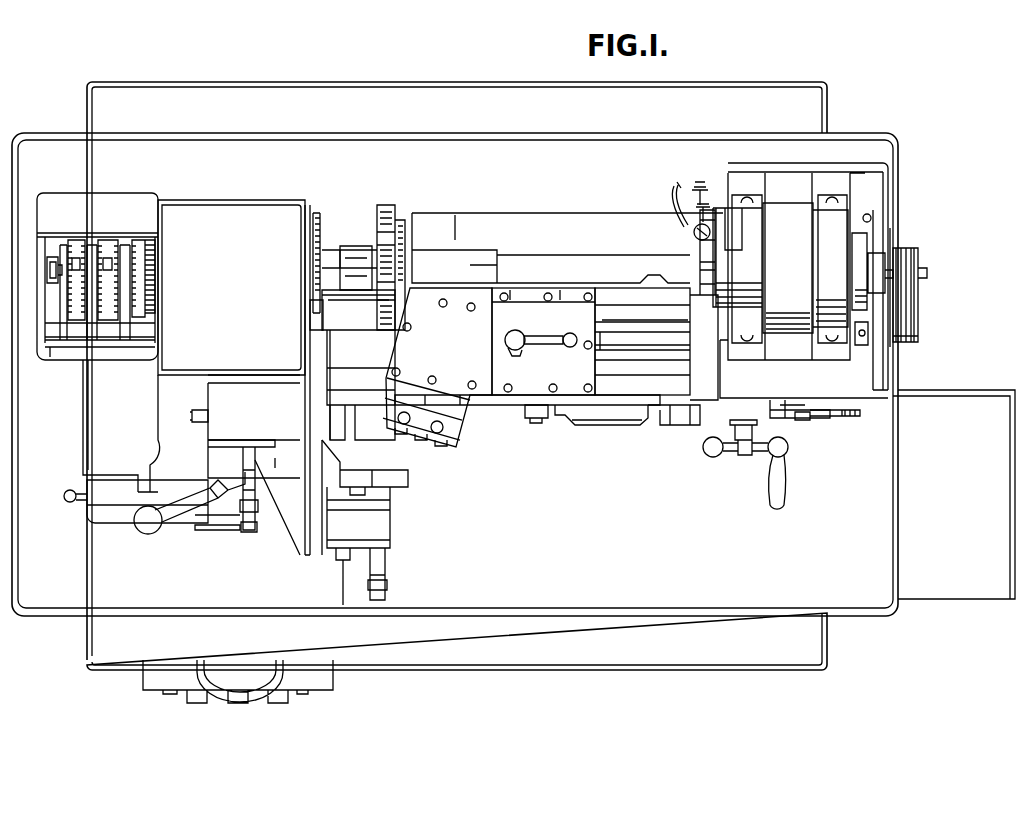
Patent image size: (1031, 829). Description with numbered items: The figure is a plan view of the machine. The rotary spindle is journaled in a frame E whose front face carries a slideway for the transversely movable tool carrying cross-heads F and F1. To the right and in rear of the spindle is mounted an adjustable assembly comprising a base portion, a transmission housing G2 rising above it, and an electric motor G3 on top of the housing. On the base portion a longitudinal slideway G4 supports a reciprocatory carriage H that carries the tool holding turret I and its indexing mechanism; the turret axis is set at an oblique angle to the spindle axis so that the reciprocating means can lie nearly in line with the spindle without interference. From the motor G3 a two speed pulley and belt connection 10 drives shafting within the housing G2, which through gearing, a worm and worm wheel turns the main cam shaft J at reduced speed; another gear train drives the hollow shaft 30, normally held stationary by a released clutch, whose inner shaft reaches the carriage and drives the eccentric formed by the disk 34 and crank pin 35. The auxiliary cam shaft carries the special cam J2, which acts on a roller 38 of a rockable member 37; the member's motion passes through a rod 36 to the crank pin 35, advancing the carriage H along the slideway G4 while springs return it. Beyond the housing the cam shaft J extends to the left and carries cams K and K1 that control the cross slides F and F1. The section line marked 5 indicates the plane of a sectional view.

The section line 5- 5 is at (408, 156).
The cam K1 is at (322, 232).
The cam K is at (394, 223).
The main cam shaft J is at (583, 262).
The slideway G4 is at (620, 318).
The electric motor G3 is at (800, 276).
The two speed pulley and belt connection 10 is at (917, 249).
The cross-head F1 is at (358, 343).
The tool holding turret I is at (460, 412).
The reciprocatory carriage H is at (531, 373).
The disk 34 is at (507, 402).
The crank pin 35 is at (563, 422).
The rod 36 is at (620, 425).
The hollow shaft 30 is at (678, 350).
The rockable member 37 is at (763, 418).
The roller 38 is at (792, 420).
The transmission housing G2 is at (867, 372).
The special cam J2 is at (845, 426).
The frame E is at (207, 444).
The cross-head F is at (382, 526).